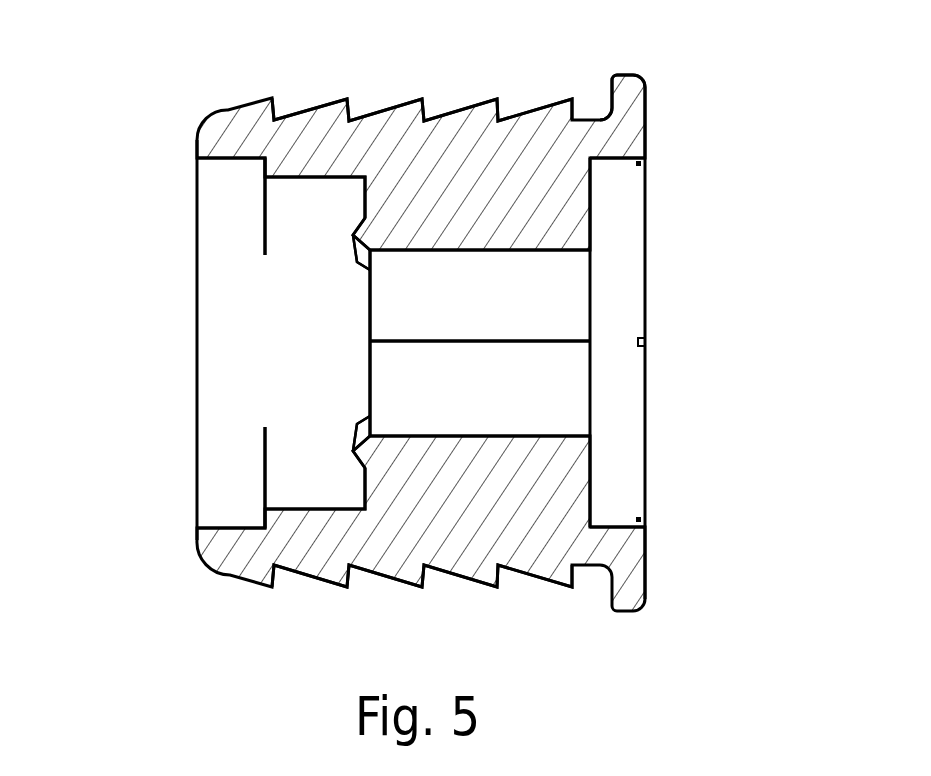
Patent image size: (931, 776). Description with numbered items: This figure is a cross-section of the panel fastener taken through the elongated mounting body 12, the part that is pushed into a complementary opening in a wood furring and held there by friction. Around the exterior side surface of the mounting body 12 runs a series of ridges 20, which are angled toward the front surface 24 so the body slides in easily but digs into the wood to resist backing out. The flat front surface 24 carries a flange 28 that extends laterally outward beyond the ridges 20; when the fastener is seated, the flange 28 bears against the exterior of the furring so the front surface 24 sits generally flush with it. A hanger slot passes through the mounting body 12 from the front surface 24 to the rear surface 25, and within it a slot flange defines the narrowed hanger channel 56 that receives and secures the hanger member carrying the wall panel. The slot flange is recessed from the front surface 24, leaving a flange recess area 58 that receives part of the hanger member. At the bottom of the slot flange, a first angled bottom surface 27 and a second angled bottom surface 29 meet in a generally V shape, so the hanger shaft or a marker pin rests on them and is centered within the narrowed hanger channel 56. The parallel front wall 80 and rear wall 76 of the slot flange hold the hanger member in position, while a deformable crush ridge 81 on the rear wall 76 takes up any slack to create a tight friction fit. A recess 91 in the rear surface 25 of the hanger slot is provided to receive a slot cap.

The elongated mounting body 12 is at (323, 540).
The ridges 20 is at (408, 578).
The front surface 24 is at (646, 90).
The rear surface 25 is at (198, 540).
The first angled bottom surface 27 is at (557, 402).
The flange 28 is at (610, 92).
The second angled bottom surface 29 is at (557, 278).
The narrowed hanger channel 56 is at (546, 326).
The flange recess area 58 is at (623, 467).
The rear wall 76 is at (365, 195).
The front wall 80 is at (592, 203).
The crush ridge 81 is at (353, 448).
The recess 91 is at (210, 184).